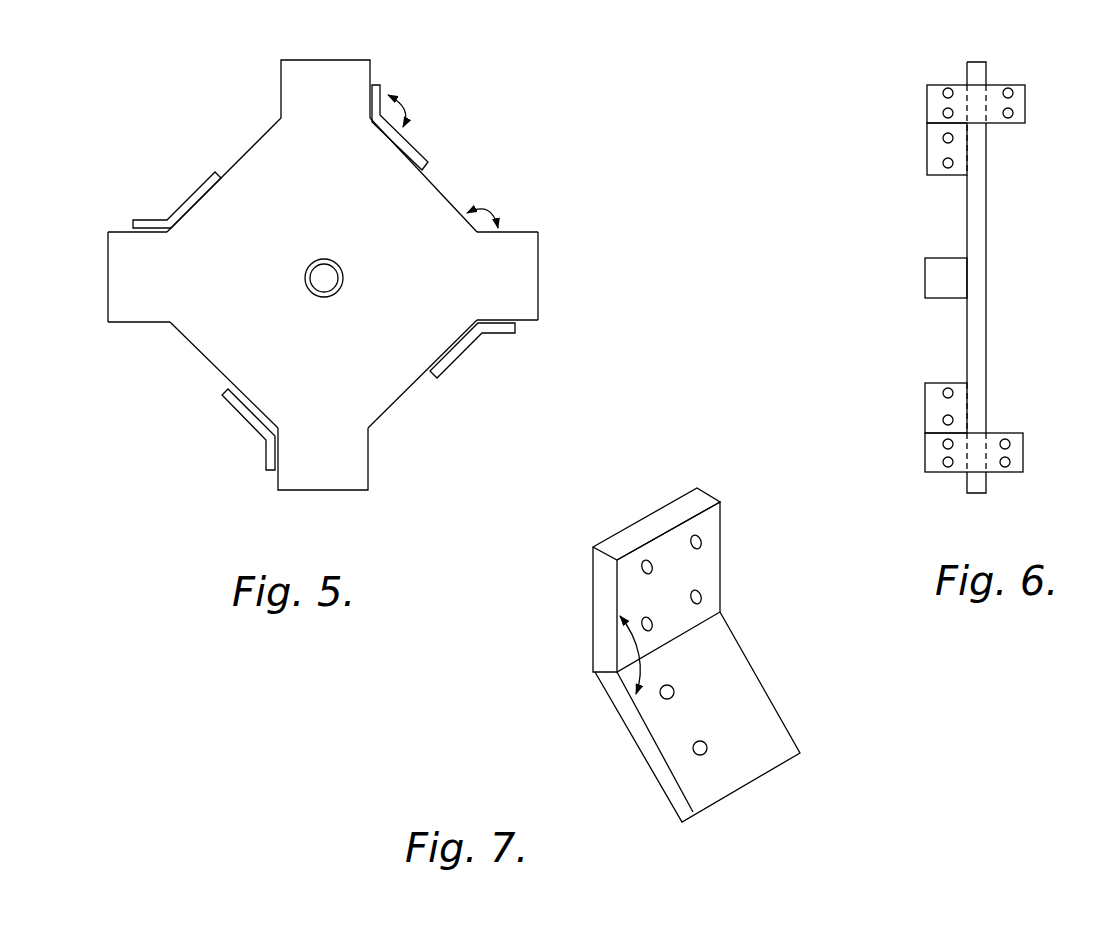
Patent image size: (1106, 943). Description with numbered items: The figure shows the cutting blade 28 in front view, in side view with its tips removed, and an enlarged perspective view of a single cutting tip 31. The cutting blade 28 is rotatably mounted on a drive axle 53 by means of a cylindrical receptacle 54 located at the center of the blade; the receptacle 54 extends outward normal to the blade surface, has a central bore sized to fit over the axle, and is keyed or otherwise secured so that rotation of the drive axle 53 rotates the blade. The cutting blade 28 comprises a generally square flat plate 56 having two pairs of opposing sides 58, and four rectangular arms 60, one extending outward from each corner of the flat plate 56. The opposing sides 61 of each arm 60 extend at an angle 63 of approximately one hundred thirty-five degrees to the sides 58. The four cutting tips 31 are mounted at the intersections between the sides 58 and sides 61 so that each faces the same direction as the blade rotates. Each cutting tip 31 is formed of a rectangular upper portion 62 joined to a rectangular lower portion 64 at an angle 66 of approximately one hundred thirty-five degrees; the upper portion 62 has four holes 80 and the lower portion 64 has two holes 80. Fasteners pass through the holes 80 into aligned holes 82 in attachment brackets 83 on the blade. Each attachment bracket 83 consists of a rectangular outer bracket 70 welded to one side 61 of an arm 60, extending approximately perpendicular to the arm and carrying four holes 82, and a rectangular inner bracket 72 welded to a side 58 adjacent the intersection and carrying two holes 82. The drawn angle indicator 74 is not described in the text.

In FIG. 5, the cutting blade 28 is at (172, 430).
In FIG. 5, the cutting tip 31 is at (176, 204).
In FIG. 7, the cutting tip 31 is at (707, 660).
In FIG. 5, the drive axle 53 is at (332, 272).
In FIG. 5, the cylindrical receptacle 54 is at (334, 296).
In FIG. 6, the cylindrical receptacle 54 is at (925, 278).
In FIG. 5, the flat plate 56 is at (223, 291).
In FIG. 5, the sides of the flat plate 58 is at (254, 145).
In FIG. 5, the rectangular arm 60 is at (334, 56).
In FIG. 5, the sides of the arm 61 is at (280, 85).
In FIG. 7, the upper portion 62 is at (600, 600).
In FIG. 5, the angle 63 is at (487, 210).
In FIG. 7, the lower portion 64 is at (662, 775).
In FIG. 7, the angle 66 is at (614, 664).
In FIG. 5, the outer bracket 70 is at (148, 234).
In FIG. 6, the outer bracket 70 is at (930, 97).
In FIG. 5, the inner bracket 72 is at (211, 196).
In FIG. 6, the inner bracket 72 is at (927, 155).
In FIG. 5, the bracket angle 74 is at (408, 108).
In FIG. 7, the holes 80 is at (645, 562).
In FIG. 6, the holes 82 is at (945, 89).
In FIG. 6, the attachment bracket 83 is at (959, 268).